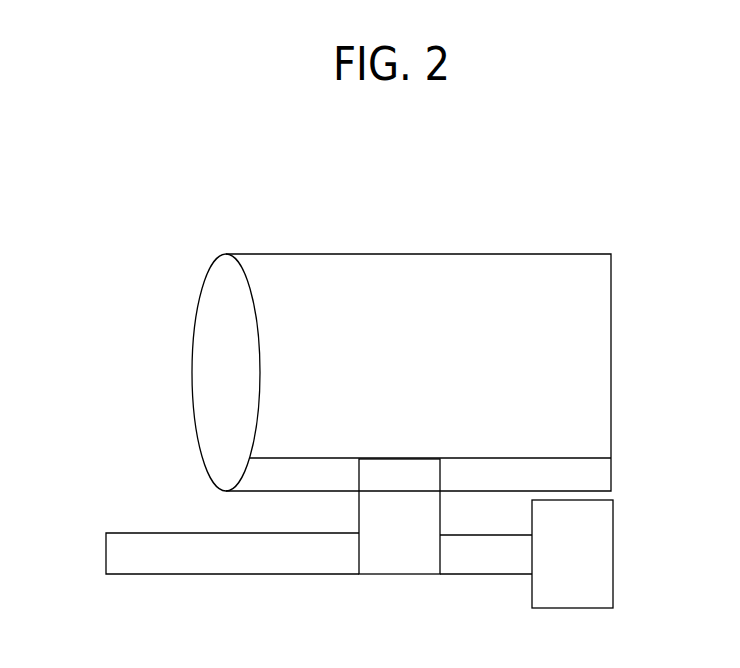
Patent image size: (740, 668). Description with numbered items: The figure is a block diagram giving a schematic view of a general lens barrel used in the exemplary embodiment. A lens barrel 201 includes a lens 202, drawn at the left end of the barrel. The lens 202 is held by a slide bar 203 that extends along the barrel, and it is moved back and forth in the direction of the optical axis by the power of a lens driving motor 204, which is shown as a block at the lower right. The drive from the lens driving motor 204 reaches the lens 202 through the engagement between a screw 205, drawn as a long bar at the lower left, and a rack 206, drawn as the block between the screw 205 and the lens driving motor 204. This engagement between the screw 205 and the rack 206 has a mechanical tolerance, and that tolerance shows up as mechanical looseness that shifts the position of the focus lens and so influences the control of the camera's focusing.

The lens barrel 201 is at (612, 302).
The lens 202 is at (195, 320).
The slide bar 203 is at (612, 463).
The lens driving motor 204 is at (613, 553).
The screw 205 is at (105, 553).
The rack 206 is at (405, 575).